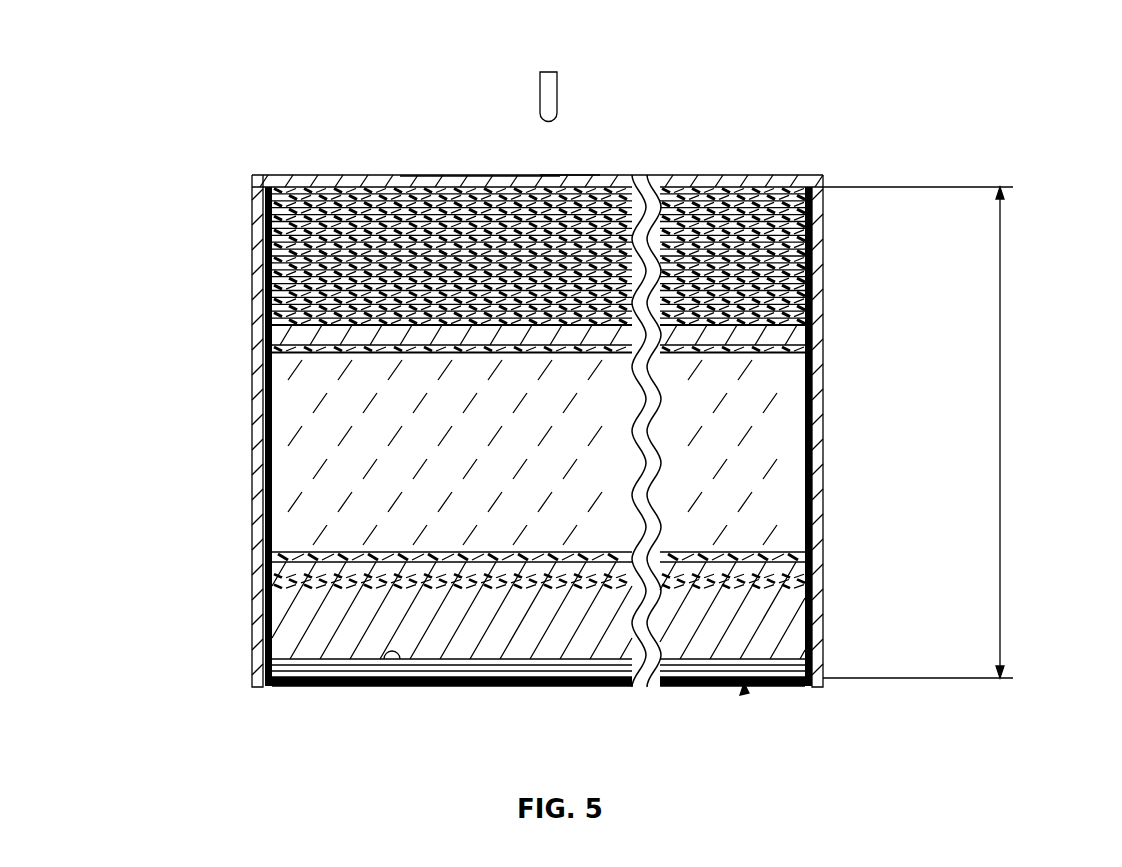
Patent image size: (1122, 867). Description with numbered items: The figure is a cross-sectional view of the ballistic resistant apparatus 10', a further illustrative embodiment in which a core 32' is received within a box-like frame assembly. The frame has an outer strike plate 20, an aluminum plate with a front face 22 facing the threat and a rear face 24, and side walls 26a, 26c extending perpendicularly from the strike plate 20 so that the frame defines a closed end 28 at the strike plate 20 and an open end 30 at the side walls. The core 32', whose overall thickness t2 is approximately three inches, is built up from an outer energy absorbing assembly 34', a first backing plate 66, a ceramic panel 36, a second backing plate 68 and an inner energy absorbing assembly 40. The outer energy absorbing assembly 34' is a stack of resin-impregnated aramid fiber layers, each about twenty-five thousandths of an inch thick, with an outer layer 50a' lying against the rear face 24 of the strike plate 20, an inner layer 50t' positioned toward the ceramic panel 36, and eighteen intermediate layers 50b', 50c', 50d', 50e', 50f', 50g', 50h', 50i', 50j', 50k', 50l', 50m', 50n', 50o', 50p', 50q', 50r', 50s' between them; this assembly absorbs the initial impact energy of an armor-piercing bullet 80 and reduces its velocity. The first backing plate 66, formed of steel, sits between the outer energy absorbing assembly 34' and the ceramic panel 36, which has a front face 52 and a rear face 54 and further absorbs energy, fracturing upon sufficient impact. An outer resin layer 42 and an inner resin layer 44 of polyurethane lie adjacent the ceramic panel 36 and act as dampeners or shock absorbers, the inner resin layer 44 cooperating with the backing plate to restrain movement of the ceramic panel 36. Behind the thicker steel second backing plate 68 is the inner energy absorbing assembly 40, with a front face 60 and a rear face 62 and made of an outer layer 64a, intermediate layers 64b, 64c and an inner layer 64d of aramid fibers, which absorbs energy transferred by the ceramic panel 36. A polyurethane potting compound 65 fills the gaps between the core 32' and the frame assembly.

The ballistic resistant apparatus 10' is at (1042, 69).
The outer strike plate 20 is at (366, 175).
The front face 22 is at (722, 175).
The rear face 24 is at (420, 185).
The side wall 26a is at (818, 460).
The side wall 26c is at (258, 615).
The closed end 28 is at (279, 137).
The open end 30 is at (290, 694).
The core 32' is at (477, 452).
The outer energy absorbing assembly 34' is at (583, 134).
The ceramic panel 36 is at (800, 497).
The inner energy absorbing assembly 40 is at (746, 692).
The outer resin layer 42 is at (268, 347).
The inner resin layer 44 is at (312, 558).
The outer layer 50a' is at (538, 146).
The intermediate layer 50b' is at (543, 155).
The intermediate layer 50c' is at (503, 162).
The intermediate layer 50d' is at (580, 169).
The intermediate layer 50e' is at (474, 185).
The intermediate layer 50f' is at (608, 192).
The intermediate layer 50g' is at (437, 200).
The intermediate layer 50h' is at (623, 217).
The intermediate layer 50i' is at (458, 223).
The intermediate layer 50j' is at (613, 241).
The intermediate layer 50k' is at (482, 244).
The intermediate layer 50l' is at (593, 269).
The intermediate layer 50m' is at (437, 263).
The intermediate layer 50n' is at (622, 294).
The intermediate layer 50o' is at (477, 291).
The intermediate layer 50p' is at (599, 316).
The intermediate layer 50q' is at (437, 317).
The intermediate layer 50r' is at (614, 341).
The intermediate layer 50s' is at (477, 338).
The inner layer 50t' is at (603, 365).
The front face 52 is at (268, 362).
The rear face 54 is at (318, 556).
The front face 60 is at (392, 662).
The rear face 62 is at (462, 688).
The outer layer 64a is at (265, 664).
The intermediate layer 64b is at (795, 668).
The intermediate layer 64c is at (262, 680).
The inner layer 64d is at (797, 688).
The potting compound 65 is at (703, 688).
The first backing plate 66 is at (268, 333).
The second backing plate 68 is at (792, 578).
The armor-piercing bullet 80 is at (540, 90).
The thickness t2 is at (1000, 385).